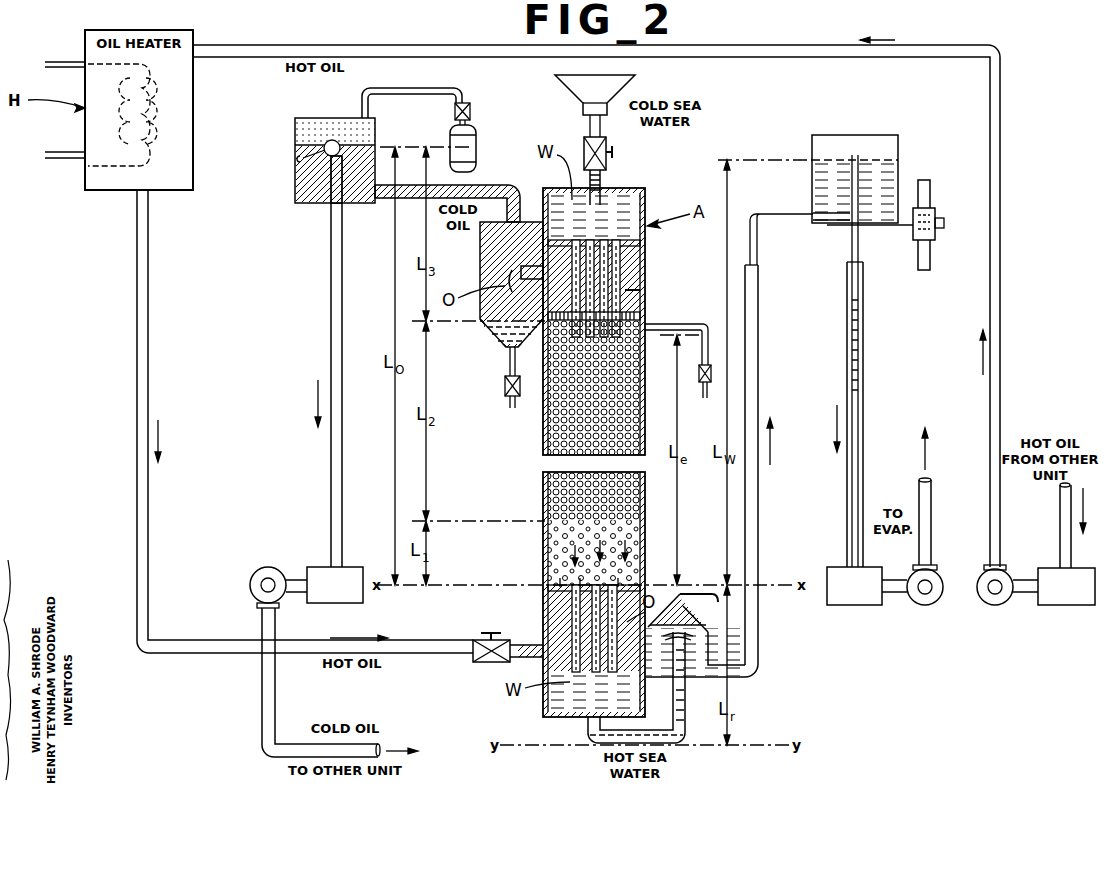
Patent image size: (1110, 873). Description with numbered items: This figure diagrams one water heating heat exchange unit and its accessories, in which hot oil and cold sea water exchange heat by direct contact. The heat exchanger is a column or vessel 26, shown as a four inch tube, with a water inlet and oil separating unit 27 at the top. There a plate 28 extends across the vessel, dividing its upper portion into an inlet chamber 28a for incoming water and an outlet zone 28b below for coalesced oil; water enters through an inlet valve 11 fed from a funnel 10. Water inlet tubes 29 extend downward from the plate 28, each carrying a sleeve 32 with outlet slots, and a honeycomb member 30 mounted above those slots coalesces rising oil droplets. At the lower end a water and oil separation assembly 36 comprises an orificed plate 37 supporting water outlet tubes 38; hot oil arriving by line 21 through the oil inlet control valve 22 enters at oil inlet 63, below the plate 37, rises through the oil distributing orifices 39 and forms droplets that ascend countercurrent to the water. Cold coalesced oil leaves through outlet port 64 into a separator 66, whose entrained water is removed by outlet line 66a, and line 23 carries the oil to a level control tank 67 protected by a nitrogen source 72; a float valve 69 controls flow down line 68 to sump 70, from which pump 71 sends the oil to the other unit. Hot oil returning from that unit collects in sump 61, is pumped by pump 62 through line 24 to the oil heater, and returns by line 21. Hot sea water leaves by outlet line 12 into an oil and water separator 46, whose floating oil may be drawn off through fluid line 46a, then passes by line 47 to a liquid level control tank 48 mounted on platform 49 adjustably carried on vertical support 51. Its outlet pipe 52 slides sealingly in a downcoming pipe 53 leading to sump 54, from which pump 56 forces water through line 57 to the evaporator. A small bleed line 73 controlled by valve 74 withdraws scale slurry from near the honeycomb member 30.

The funnel for cold sea water 10 is at (602, 88).
The inlet valve 11 is at (584, 145).
The outlet line 12 is at (688, 725).
The line 21 is at (148, 371).
The oil inlet control valve 22 is at (485, 640).
The line 23 is at (262, 678).
The line 24 is at (388, 44).
The column or vessel 26 is at (647, 207).
The water inlet and oil separating unit 27 is at (628, 277).
The plate 28 is at (625, 237).
The inlet chamber 28a is at (610, 202).
The outlet zone 28b is at (625, 290).
The water inlet tubes 29 is at (620, 259).
The honeycomb member 30 is at (645, 315).
The sleeve 32 is at (638, 336).
The water and oil separation assembly 36 is at (547, 600).
The orificed plate 37 is at (546, 588).
The water conducting outlet tubes 38 is at (565, 632).
The oil distributing orifices 39 is at (567, 586).
The oil and water separator 46 is at (721, 608).
The fluid line 46a is at (705, 592).
The line 47 is at (760, 372).
The liquid level control tank 48 is at (898, 149).
The platform 49 is at (866, 225).
The vertical support 51 is at (930, 256).
The outlet pipe 52 is at (850, 250).
The downcoming pipe 53 is at (861, 430).
The sump 54 is at (858, 605).
The pump 56 is at (929, 605).
The line 57 is at (930, 512).
The sump 61 is at (1065, 605).
The pump 62 is at (998, 605).
The oil inlet 63 is at (525, 660).
The outlet port 64 is at (526, 264).
The separator 66 is at (480, 257).
The outlet line 66a is at (508, 358).
The level control tank 67 is at (298, 160).
The down coming line 68 is at (330, 460).
The float valve 69 is at (323, 145).
The sump 70 is at (320, 567).
The pump 71 is at (250, 582).
The source of nitrogen gas 72 is at (461, 132).
The bleed line 73 is at (697, 372).
The valve 74 is at (709, 390).